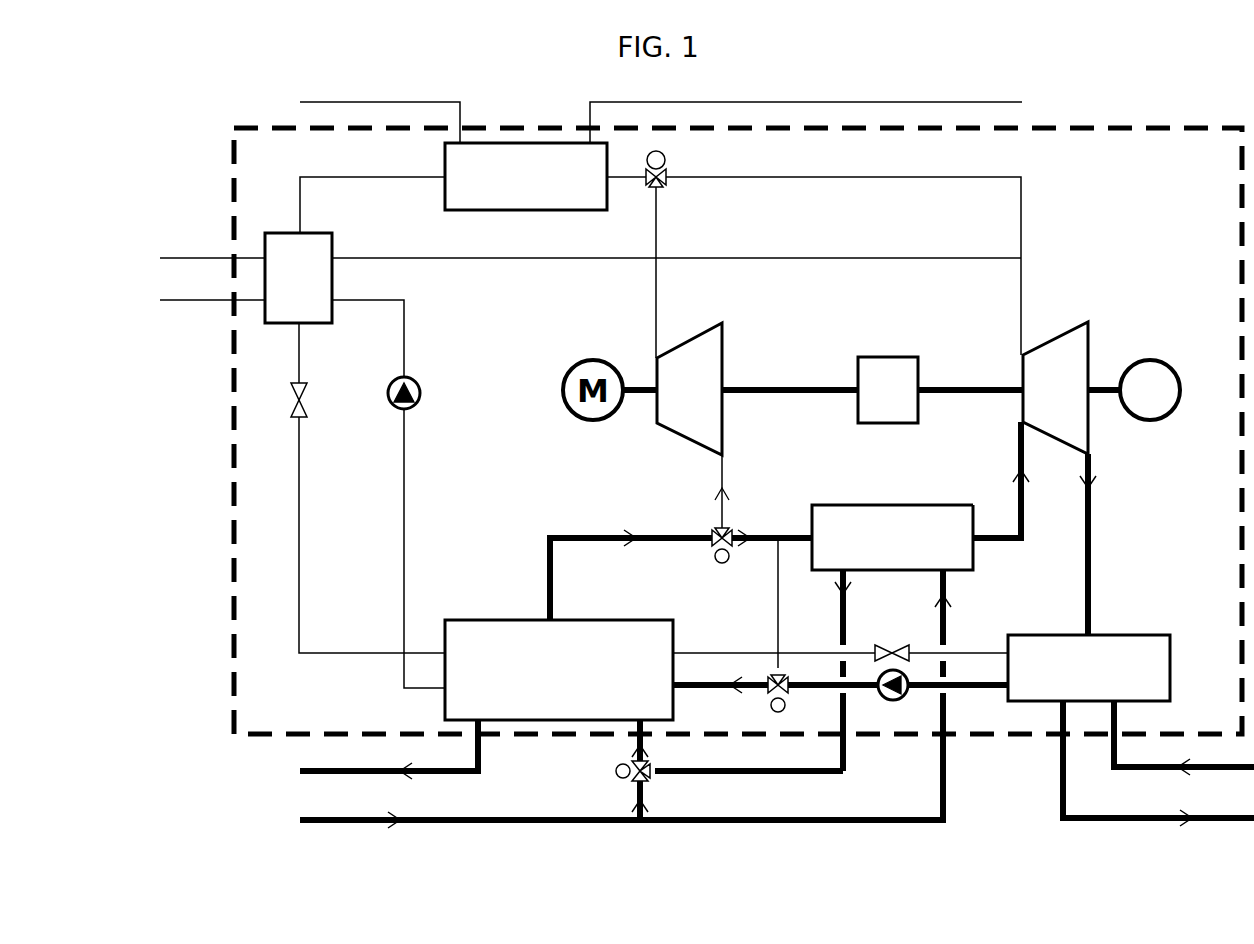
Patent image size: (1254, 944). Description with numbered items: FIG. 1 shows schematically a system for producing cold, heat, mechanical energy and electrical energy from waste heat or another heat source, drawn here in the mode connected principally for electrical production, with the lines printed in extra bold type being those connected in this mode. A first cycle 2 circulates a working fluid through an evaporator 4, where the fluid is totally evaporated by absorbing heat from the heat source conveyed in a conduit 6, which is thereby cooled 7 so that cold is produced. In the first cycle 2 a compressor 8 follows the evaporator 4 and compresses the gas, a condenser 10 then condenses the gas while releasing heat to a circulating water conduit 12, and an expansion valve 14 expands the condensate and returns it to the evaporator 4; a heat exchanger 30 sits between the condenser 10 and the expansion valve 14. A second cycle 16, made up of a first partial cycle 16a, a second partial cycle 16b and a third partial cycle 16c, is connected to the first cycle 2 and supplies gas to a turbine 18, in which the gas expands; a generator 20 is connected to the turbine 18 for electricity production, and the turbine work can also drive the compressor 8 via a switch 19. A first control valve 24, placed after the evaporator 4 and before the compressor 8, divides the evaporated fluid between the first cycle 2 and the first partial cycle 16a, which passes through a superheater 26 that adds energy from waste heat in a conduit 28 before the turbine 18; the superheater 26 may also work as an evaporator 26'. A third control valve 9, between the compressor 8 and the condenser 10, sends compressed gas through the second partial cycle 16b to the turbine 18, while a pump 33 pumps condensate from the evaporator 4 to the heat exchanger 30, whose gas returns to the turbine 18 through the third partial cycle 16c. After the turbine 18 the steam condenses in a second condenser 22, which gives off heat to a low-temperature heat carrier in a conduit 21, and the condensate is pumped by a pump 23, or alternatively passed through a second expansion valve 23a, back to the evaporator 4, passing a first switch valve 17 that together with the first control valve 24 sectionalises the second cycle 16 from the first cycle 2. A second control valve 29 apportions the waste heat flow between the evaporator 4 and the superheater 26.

The first cycle 2 is at (350, 177).
The evaporator 4 is at (559, 670).
The conduit 6 is at (578, 818).
The cooled flow 7 is at (355, 774).
The compressor 8 is at (740, 389).
The third control valve 9 is at (665, 157).
The condenser 10 is at (526, 176).
The circulating water conduit 12 is at (590, 100).
The expansion valve 14 is at (307, 400).
The second cycle 16 is at (1064, 556).
The first partial cycle 16a is at (590, 538).
The second partial cycle 16b is at (905, 177).
The third partial cycle 16c is at (918, 258).
The first switch valve 17 is at (785, 709).
The turbine 18 is at (1055, 388).
The switch 19 is at (989, 390).
The generator 20 is at (1172, 370).
The conduit 21 is at (204, 262).
The second condenser 22 is at (1089, 668).
The pump 23 is at (895, 700).
The second expansion valve 23a is at (878, 629).
The first control valve 24 is at (722, 563).
The superheater 26 is at (892, 537).
The evaporator 26' is at (932, 537).
The conduit 28 is at (943, 803).
The second control valve 29 is at (650, 780).
The heat exchanger 30 is at (298, 278).
The pump 33 is at (421, 393).